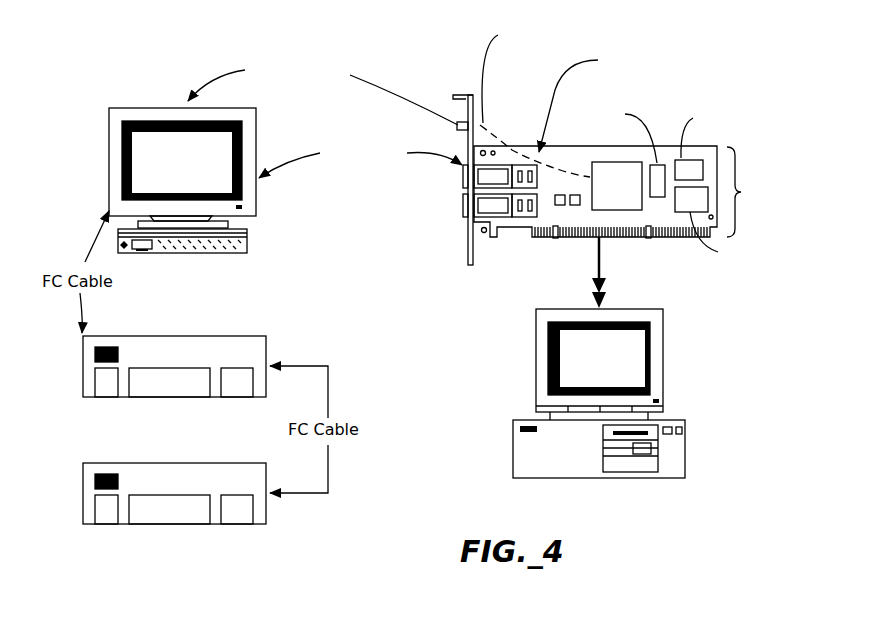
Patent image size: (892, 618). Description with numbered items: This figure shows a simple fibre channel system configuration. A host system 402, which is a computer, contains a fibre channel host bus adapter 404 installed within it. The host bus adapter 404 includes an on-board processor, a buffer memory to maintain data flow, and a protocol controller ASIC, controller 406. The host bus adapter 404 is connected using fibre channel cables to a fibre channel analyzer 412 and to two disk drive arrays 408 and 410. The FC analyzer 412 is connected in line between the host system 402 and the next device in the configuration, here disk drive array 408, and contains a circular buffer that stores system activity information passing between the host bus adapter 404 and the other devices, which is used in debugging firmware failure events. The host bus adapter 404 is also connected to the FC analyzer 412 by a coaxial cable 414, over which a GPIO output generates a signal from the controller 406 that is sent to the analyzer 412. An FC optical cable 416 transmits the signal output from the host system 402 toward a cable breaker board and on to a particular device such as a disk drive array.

The host system 402 is at (688, 418).
The fibre channel host bus adapter 404 is at (616, 164).
The controller 406 is at (634, 210).
The disk drive array 408 is at (269, 334).
The disk drive array 410 is at (269, 526).
The fibre channel analyzer 412 is at (250, 256).
The coaxial cable 414 is at (297, 55).
The FC optical cable 416 is at (355, 167).